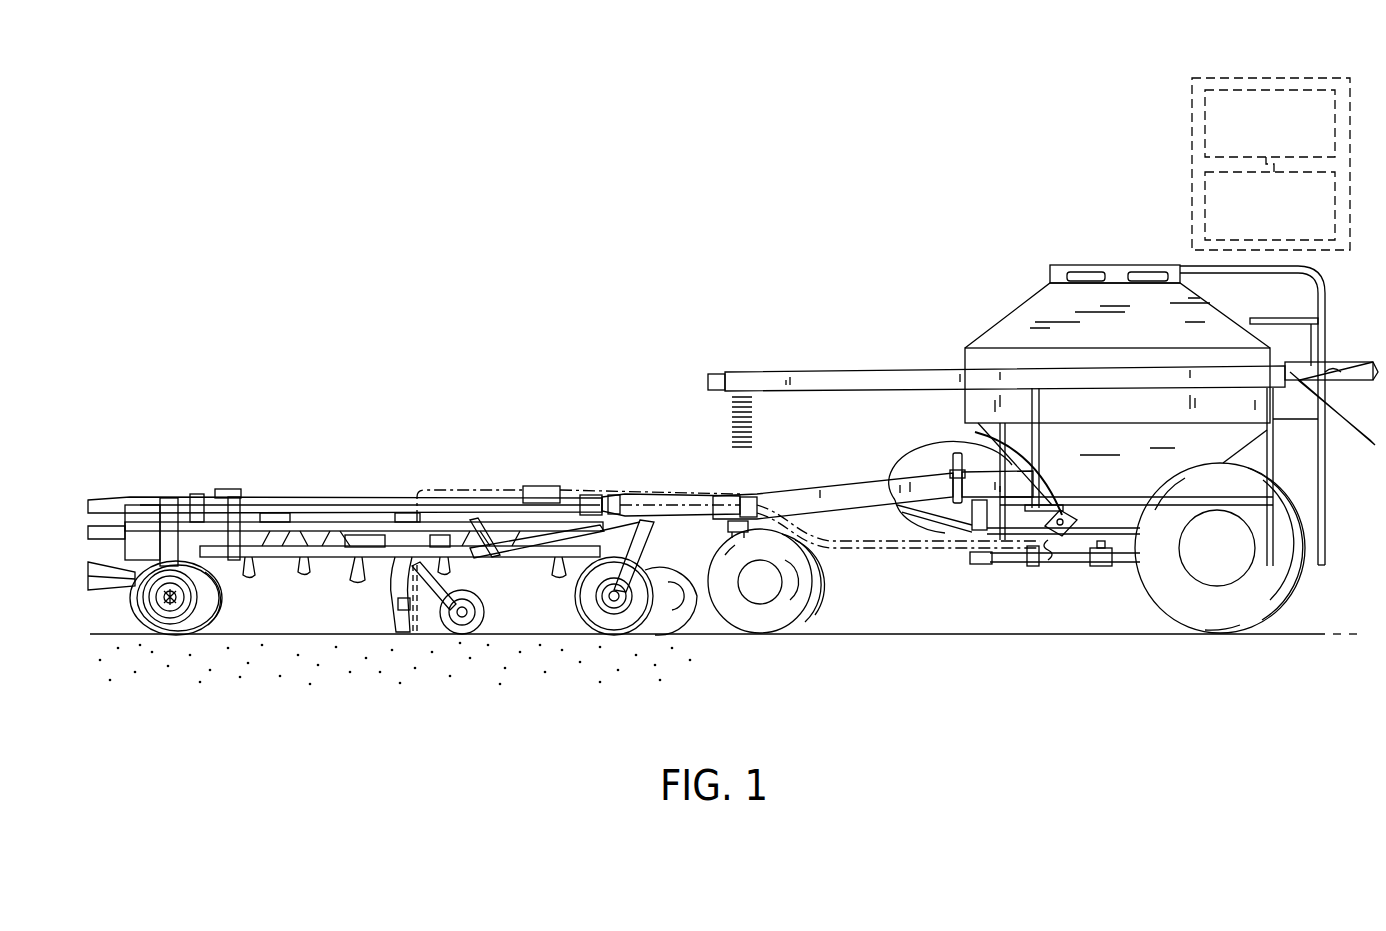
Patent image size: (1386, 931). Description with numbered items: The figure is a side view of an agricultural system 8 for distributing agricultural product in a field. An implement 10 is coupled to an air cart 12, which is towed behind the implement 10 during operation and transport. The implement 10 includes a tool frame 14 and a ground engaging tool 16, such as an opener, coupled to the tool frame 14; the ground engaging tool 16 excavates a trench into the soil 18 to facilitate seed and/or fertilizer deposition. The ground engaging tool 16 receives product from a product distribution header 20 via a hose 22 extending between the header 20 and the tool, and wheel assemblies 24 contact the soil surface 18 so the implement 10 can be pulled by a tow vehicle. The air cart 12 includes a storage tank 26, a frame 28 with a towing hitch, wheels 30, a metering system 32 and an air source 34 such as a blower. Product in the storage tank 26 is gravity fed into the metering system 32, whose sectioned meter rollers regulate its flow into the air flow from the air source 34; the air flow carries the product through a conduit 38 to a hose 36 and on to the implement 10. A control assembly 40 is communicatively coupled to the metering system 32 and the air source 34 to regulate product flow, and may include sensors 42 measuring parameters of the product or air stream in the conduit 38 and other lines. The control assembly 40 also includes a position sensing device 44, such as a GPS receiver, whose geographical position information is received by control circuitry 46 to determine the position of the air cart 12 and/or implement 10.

The agricultural system 8 is at (652, 278).
The implement 10 is at (422, 559).
The air cart 12 is at (1046, 381).
The tool frame 14 is at (398, 507).
The ground engaging tool 16 is at (402, 637).
The soil 18 is at (517, 634).
The product distribution header 20 is at (548, 485).
The hose 22 is at (473, 487).
The wheel assemblies 24 is at (172, 637).
The storage tank 26 is at (1040, 306).
The frame 28 is at (835, 486).
The wheels 30 is at (832, 590).
The metering system 32 is at (1066, 530).
The air source 34 is at (906, 462).
The hose 36 is at (905, 552).
The conduit 38 is at (1052, 560).
The control assembly 40 is at (1259, 177).
The sensors 42 is at (975, 432).
The position sensing device 44 is at (1204, 205).
The control circuitry 46 is at (1338, 122).